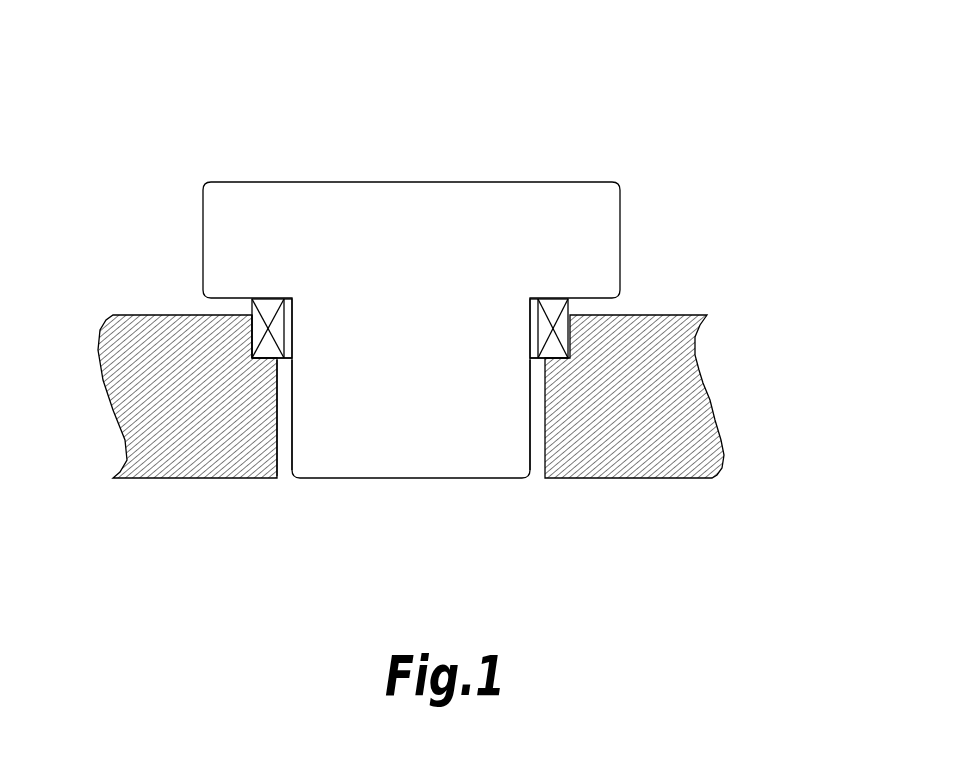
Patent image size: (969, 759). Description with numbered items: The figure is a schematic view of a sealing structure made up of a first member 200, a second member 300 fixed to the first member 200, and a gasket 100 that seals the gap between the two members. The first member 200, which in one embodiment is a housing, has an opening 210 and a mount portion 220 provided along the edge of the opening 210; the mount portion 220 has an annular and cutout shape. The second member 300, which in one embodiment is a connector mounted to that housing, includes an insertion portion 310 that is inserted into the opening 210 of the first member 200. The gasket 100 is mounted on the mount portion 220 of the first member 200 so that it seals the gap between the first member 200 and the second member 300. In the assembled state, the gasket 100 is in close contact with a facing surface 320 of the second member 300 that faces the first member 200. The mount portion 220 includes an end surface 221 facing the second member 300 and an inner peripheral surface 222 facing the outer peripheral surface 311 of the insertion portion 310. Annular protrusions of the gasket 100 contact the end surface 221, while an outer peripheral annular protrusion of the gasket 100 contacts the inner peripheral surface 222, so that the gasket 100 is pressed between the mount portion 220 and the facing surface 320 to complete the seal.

The gasket 100 is at (563, 337).
The first member 200 is at (660, 492).
The opening 210 is at (277, 420).
The mount portion 220 is at (255, 336).
The end surface 221 is at (293, 340).
The inner peripheral surface 222 is at (255, 347).
The second member 300 is at (518, 142).
The insertion portion 310 is at (430, 453).
The outer peripheral surface 311 is at (543, 360).
The facing surface 320 is at (568, 328).